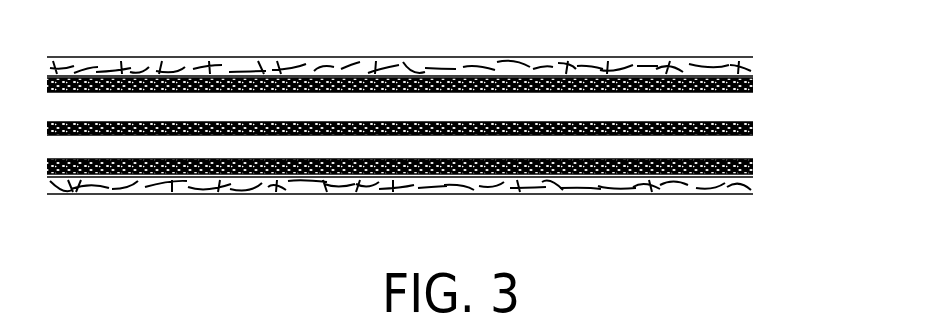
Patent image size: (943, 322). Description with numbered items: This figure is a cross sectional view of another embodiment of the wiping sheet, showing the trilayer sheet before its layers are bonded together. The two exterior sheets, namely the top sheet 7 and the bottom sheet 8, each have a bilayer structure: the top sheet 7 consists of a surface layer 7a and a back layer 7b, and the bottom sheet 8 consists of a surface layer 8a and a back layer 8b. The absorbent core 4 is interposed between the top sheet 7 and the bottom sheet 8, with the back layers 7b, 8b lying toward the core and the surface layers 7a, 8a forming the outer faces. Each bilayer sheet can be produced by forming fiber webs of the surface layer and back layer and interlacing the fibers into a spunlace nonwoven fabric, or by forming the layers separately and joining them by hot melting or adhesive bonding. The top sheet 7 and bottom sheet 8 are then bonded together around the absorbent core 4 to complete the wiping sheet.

The top sheet 7 is at (455, 59).
The surface layer 7a is at (753, 64).
The back layer 7b is at (753, 85).
The absorbent core 4 is at (753, 125).
The bottom sheet 8 is at (455, 180).
The back layer 8b is at (753, 168).
The surface layer 8a is at (753, 185).